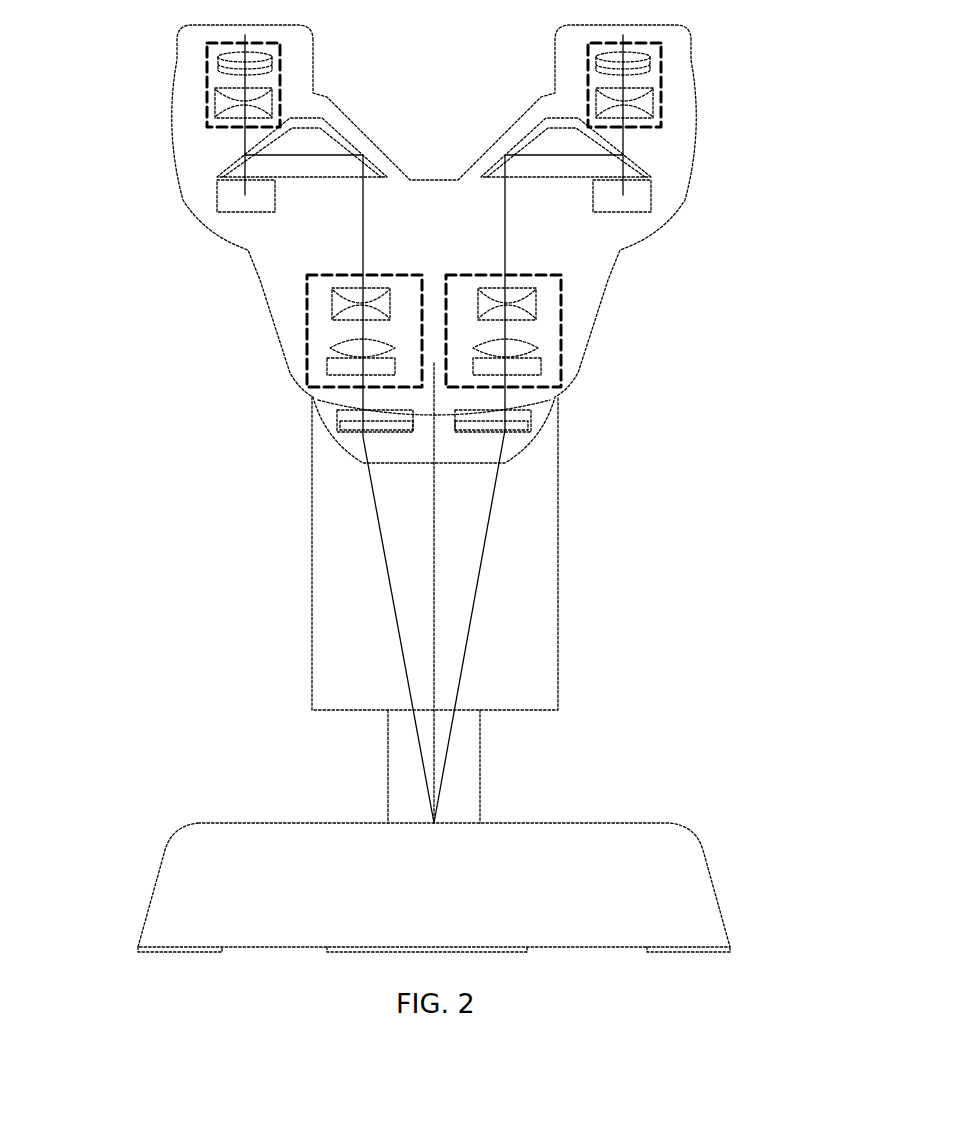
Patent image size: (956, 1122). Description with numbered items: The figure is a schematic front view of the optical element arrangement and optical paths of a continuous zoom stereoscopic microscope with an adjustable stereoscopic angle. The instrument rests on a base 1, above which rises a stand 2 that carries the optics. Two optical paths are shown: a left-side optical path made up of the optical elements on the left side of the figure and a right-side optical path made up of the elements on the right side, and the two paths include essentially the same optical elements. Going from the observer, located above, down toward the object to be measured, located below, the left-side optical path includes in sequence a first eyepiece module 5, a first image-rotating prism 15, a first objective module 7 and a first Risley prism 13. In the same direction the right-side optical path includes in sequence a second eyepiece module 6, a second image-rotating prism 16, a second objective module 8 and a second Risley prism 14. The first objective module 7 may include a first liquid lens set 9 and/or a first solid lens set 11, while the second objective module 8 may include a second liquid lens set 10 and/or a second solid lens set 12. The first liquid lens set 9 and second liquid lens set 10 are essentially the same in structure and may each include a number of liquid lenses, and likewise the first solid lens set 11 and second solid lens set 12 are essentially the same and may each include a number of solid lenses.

The base 1 is at (667, 890).
The stand 2 is at (542, 633).
The first eyepiece module 5 is at (217, 78).
The second eyepiece module 6 is at (651, 78).
The first objective module 7 is at (318, 380).
The second objective module 8 is at (548, 377).
The first liquid lens set 9 is at (333, 308).
The second liquid lens set 10 is at (523, 310).
The first solid lens set 11 is at (328, 363).
The second solid lens set 12 is at (523, 345).
The first Risley prism 13 is at (342, 435).
The second Risley prism 14 is at (527, 432).
The first image-rotating prism 15 is at (223, 193).
The second image-rotating prism 16 is at (643, 193).